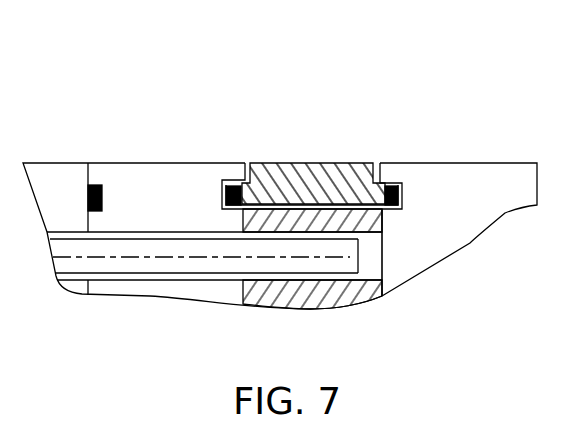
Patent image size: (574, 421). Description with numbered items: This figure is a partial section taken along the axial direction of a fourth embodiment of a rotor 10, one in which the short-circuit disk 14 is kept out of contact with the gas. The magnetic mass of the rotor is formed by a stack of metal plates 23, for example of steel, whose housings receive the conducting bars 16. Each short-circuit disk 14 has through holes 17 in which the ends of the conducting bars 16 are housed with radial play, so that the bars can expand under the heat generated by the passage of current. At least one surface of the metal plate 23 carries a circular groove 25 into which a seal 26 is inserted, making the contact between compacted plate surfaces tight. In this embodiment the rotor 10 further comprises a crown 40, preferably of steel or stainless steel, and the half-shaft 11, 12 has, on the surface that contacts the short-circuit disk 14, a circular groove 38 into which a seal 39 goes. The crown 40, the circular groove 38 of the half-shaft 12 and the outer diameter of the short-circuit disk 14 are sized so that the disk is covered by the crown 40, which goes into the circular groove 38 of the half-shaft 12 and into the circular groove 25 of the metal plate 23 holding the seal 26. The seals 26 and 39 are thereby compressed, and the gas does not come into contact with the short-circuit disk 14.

The rotor 10 is at (458, 74).
The half-shaft 11 is at (460, 199).
The half-shaft 12 is at (497, 163).
The short-circuit disk 14 is at (318, 298).
The conducting bar 16 is at (138, 268).
The through hole 17 is at (372, 268).
The metal plate 23 is at (165, 163).
The circular groove 25 is at (243, 162).
The seal 26 is at (224, 188).
The circular groove 38 is at (399, 188).
The seal 39 is at (396, 172).
The crown 40 is at (313, 163).